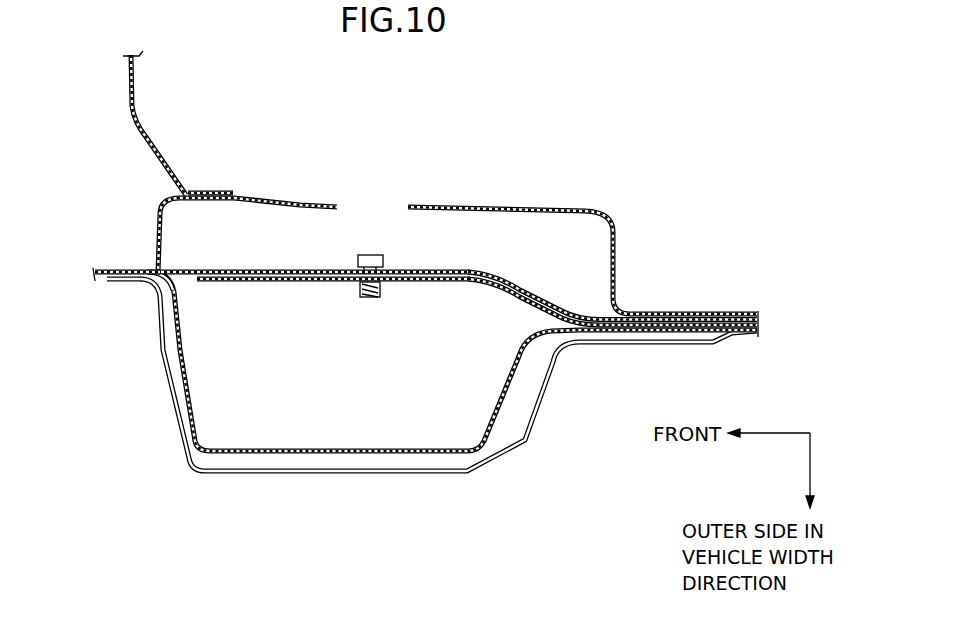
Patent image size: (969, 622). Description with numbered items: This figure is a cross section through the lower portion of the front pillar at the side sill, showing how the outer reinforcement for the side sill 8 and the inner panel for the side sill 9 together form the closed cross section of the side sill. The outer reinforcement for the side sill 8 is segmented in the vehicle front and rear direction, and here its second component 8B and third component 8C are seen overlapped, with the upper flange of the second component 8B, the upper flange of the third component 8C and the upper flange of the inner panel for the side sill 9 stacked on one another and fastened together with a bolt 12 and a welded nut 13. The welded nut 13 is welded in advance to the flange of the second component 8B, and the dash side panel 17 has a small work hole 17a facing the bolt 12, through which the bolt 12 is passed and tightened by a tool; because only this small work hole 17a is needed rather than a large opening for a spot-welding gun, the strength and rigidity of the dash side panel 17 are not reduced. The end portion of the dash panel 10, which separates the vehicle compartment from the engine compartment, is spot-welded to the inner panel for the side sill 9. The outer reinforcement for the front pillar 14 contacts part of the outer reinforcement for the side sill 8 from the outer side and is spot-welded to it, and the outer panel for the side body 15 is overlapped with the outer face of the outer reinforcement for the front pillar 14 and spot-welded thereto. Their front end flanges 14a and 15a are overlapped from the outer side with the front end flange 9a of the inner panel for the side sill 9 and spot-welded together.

The outer reinforcement for the side sill 8 is at (477, 299).
The second component 8B is at (437, 281).
The third component 8C is at (528, 292).
The inner panel for the side sill 9 is at (281, 250).
The front end flange of the inner panel for the side sill 9a is at (118, 263).
The dash panel 10 is at (145, 140).
The bolt 12 is at (370, 254).
The welded nut 13 is at (356, 290).
The outer reinforcement for the front pillar 14 is at (431, 361).
The front end flange of the outer reinforcement for the front pillar 14a is at (140, 286).
The outer panel for the side body 15 is at (410, 404).
The front end flange of the outer panel for the side body 15a is at (115, 283).
The dash side panel 17 is at (545, 211).
The work hole 17a is at (410, 203).